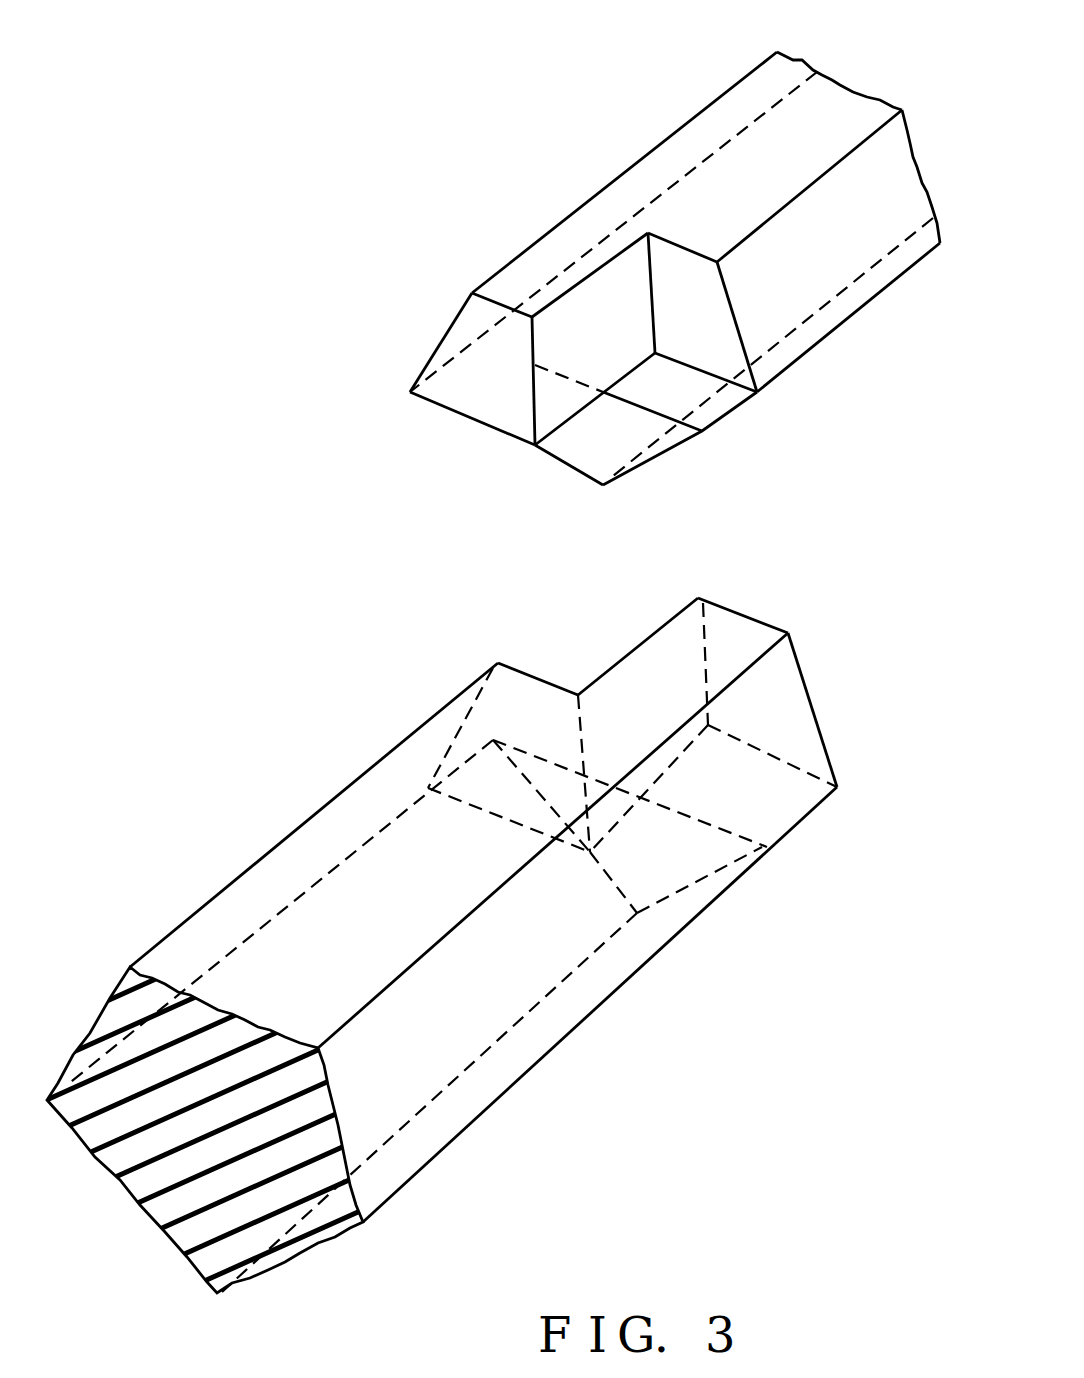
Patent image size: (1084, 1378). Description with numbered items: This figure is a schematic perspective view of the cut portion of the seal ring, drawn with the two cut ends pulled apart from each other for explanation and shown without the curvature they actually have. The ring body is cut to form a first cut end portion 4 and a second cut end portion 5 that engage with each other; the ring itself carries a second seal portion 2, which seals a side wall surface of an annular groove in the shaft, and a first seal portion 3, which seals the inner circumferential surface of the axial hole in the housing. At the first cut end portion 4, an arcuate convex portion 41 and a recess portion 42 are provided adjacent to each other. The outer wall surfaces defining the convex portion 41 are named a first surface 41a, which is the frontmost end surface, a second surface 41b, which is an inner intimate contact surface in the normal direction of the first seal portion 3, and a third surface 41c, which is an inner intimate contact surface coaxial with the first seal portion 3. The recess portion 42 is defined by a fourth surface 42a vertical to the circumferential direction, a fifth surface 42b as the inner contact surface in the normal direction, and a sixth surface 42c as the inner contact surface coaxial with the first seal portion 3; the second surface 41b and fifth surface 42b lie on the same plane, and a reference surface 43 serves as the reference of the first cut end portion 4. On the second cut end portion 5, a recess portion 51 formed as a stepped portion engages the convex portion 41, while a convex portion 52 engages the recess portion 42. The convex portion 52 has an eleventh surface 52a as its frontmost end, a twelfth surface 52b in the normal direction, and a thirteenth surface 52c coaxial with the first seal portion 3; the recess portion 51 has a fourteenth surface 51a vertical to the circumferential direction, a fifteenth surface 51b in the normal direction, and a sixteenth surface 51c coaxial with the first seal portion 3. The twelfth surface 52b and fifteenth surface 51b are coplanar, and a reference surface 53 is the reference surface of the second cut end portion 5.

The second seal portion 2 is at (897, 283).
The first seal portion 3 is at (757, 83).
The first cut end portion 4 is at (264, 822).
The second cut end portion 5 is at (681, 100).
The convex portion 41 is at (755, 638).
The first surface 41a is at (775, 690).
The second surface 41b is at (677, 652).
The third surface 41c is at (777, 810).
The recess portion 42 is at (570, 660).
The fourth surface 42a is at (518, 710).
The fifth surface 42b is at (623, 717).
The sixth surface 42c is at (483, 777).
The reference surface 43 is at (690, 860).
The recess portion 51 is at (702, 308).
The fourteenth surface 51a is at (722, 345).
The fifteenth surface 51b is at (632, 270).
The sixteenth surface 51c is at (727, 410).
The convex portion 52 is at (497, 282).
The eleventh surface 52a is at (447, 340).
The twelfth surface 52b is at (556, 300).
The thirteenth surface 52c is at (493, 397).
The reference surface 53 is at (658, 453).